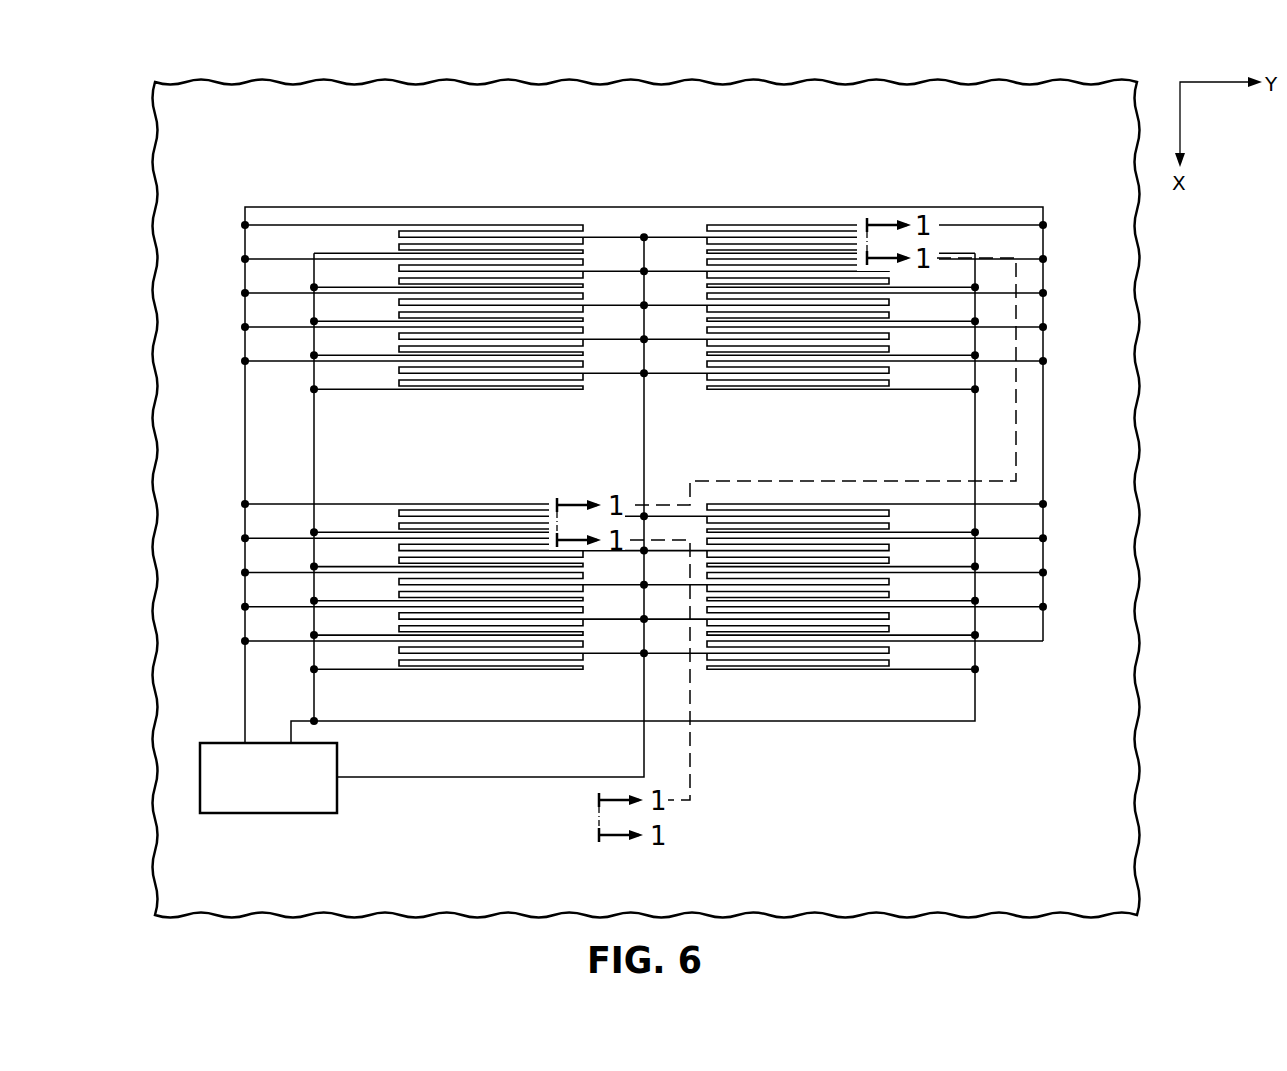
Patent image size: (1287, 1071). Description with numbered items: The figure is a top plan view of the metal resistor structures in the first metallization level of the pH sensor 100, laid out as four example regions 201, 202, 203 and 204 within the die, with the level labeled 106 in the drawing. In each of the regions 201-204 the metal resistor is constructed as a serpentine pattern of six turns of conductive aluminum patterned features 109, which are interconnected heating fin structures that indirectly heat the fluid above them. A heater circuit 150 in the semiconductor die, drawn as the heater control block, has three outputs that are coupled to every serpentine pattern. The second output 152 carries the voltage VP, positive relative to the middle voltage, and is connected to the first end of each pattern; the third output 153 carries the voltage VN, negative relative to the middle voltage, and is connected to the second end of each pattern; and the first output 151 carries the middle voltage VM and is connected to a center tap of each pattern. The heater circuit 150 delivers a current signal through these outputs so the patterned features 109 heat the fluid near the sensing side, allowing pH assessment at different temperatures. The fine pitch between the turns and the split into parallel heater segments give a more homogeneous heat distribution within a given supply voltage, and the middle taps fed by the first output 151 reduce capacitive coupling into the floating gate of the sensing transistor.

The sensor 100 is at (94, 112).
The substrate 106 is at (577, 160).
The heating fin structures 109 is at (452, 390).
The heater circuit 150 is at (270, 815).
The first output 151 is at (462, 780).
The second output 152 is at (243, 677).
The third output 153 is at (297, 720).
The region 201 is at (387, 181).
The region 202 is at (715, 181).
The region 203 is at (385, 477).
The region 204 is at (958, 751).